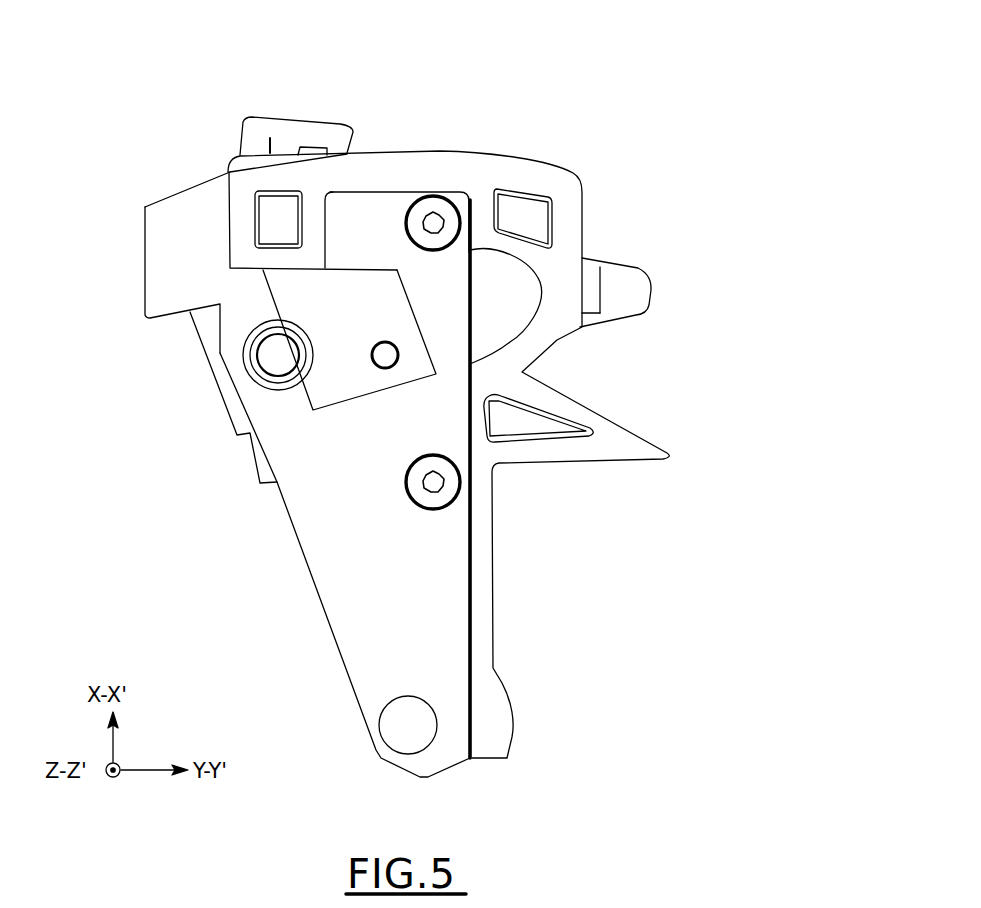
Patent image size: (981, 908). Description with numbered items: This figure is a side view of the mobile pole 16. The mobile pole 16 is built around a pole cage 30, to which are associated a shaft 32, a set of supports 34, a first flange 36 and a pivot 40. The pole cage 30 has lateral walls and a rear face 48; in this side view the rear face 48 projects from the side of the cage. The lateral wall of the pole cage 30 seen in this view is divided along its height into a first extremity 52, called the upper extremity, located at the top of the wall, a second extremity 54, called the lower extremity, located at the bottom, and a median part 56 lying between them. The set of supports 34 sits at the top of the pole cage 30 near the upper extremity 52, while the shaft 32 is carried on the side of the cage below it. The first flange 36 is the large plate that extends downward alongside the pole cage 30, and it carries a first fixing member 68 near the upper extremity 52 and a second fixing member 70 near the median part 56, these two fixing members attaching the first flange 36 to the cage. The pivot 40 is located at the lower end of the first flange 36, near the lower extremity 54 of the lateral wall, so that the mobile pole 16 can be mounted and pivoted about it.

The mobile pole 16 is at (171, 104).
The pole cage 30 is at (440, 151).
The shaft 32 is at (272, 358).
The set of supports 34 is at (270, 137).
The first flange 36 is at (355, 570).
The pivot 40 is at (390, 728).
The rear face 48 is at (698, 367).
The first extremity 52 is at (347, 229).
The second extremity 54 is at (443, 636).
The median part 56 is at (450, 547).
The first fixing member 68 is at (443, 207).
The second fixing member 70 is at (452, 490).